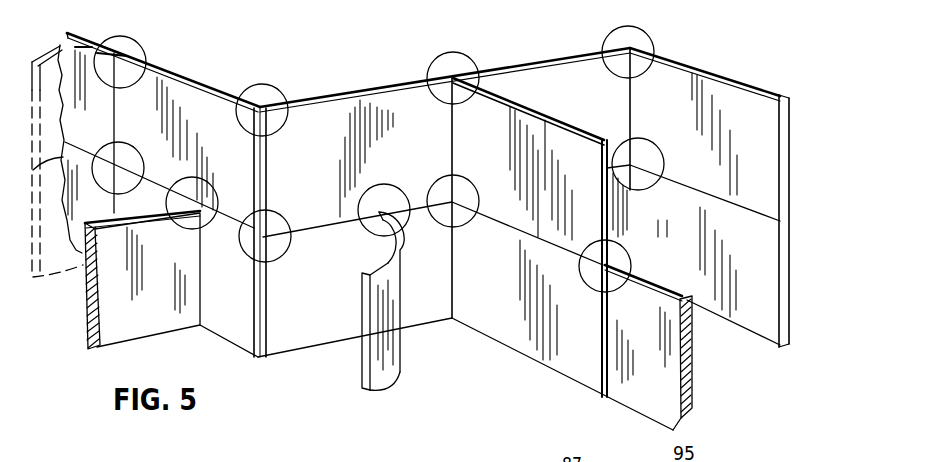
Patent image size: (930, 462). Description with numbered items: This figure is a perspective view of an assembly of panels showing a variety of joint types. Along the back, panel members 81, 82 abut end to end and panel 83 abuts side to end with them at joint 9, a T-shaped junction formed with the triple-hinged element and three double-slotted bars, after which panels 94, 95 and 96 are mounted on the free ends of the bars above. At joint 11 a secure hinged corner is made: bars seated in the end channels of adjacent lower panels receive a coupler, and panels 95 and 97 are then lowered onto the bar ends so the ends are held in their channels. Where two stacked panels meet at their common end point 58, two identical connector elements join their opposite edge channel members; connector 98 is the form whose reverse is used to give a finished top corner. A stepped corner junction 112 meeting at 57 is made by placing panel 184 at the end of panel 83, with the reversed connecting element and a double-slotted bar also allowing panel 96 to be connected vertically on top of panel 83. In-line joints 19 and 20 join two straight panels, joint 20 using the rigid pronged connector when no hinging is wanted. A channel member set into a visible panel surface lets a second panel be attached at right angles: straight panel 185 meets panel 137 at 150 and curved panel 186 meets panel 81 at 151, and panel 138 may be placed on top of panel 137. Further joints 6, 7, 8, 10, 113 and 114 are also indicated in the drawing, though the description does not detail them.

The corner post connector 6 is at (251, 77).
The lower post connector 7 is at (290, 256).
The top rail connector 8 is at (420, 63).
The joint 9 is at (471, 230).
The corner post connector 10 is at (664, 42).
The joint 11 is at (658, 196).
The in-line joint 19 is at (110, 140).
The in-line joint 20 is at (154, 43).
The meeting point 57 is at (611, 280).
The common end point 58 is at (777, 220).
The panel member 81 is at (423, 315).
The panel 82 is at (628, 256).
The panel 83 is at (513, 337).
The panel 94 is at (325, 112).
The panel 95 is at (533, 72).
The panel 96 is at (487, 107).
The panel 97 is at (745, 97).
The connector 98 is at (767, 330).
The stepped corner junction 112 is at (578, 282).
The rail connector 113 is at (215, 181).
The rail connector 114 is at (399, 186).
The panel 137 is at (247, 333).
The panel 138 is at (200, 100).
The joint 150 is at (193, 220).
The joint 151 is at (363, 233).
The panel 184 is at (648, 402).
The straight projecting panel 185 is at (122, 327).
The curved projecting panel 186 is at (393, 375).